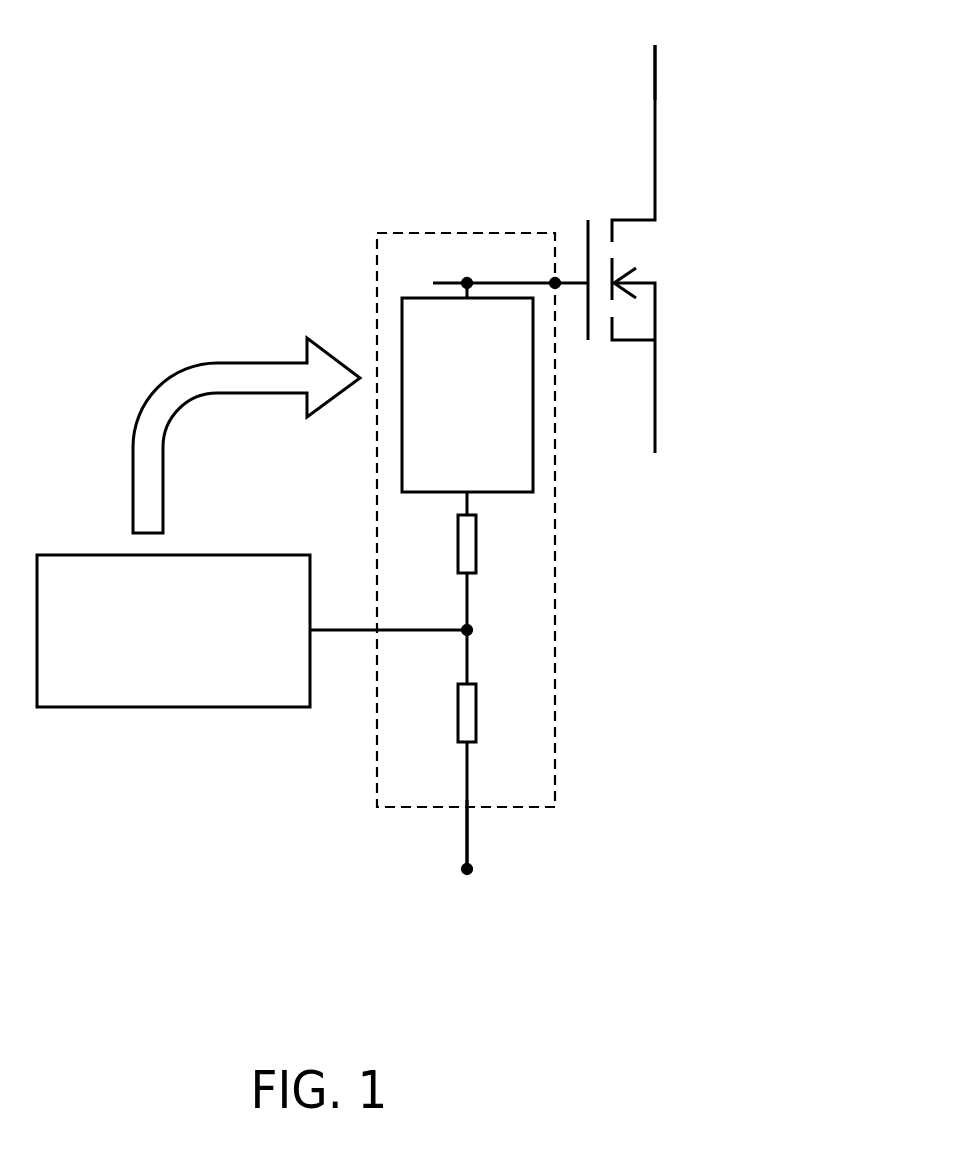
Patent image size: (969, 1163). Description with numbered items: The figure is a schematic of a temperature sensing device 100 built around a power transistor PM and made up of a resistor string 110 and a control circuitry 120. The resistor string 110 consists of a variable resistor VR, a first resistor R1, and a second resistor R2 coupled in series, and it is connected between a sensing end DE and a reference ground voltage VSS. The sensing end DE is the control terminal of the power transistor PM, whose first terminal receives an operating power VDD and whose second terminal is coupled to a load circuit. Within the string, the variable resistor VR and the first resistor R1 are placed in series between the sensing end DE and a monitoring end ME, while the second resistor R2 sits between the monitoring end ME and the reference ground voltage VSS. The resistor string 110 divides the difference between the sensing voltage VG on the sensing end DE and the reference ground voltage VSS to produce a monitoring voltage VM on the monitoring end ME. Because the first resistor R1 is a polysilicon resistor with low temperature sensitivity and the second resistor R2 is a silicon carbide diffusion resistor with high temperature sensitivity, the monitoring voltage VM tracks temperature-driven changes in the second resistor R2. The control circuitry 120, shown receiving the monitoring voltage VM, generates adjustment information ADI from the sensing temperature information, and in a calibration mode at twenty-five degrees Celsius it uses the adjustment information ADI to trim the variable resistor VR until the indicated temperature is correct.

The temperature sensing device 100 is at (371, 473).
The resistor string 110 is at (556, 622).
The control circuitry 120 is at (177, 707).
The power transistor PM is at (628, 249).
The variable resistor VR is at (533, 416).
The first resistor R1 is at (485, 561).
The second resistor R2 is at (487, 749).
The monitoring end ME is at (471, 628).
The sensing end DE is at (557, 281).
The sensing voltage VG is at (494, 269).
The monitoring voltage VM is at (388, 614).
The operating power VDD is at (655, 52).
The reference ground voltage VSS is at (469, 857).
The adjustment information ADI is at (246, 424).